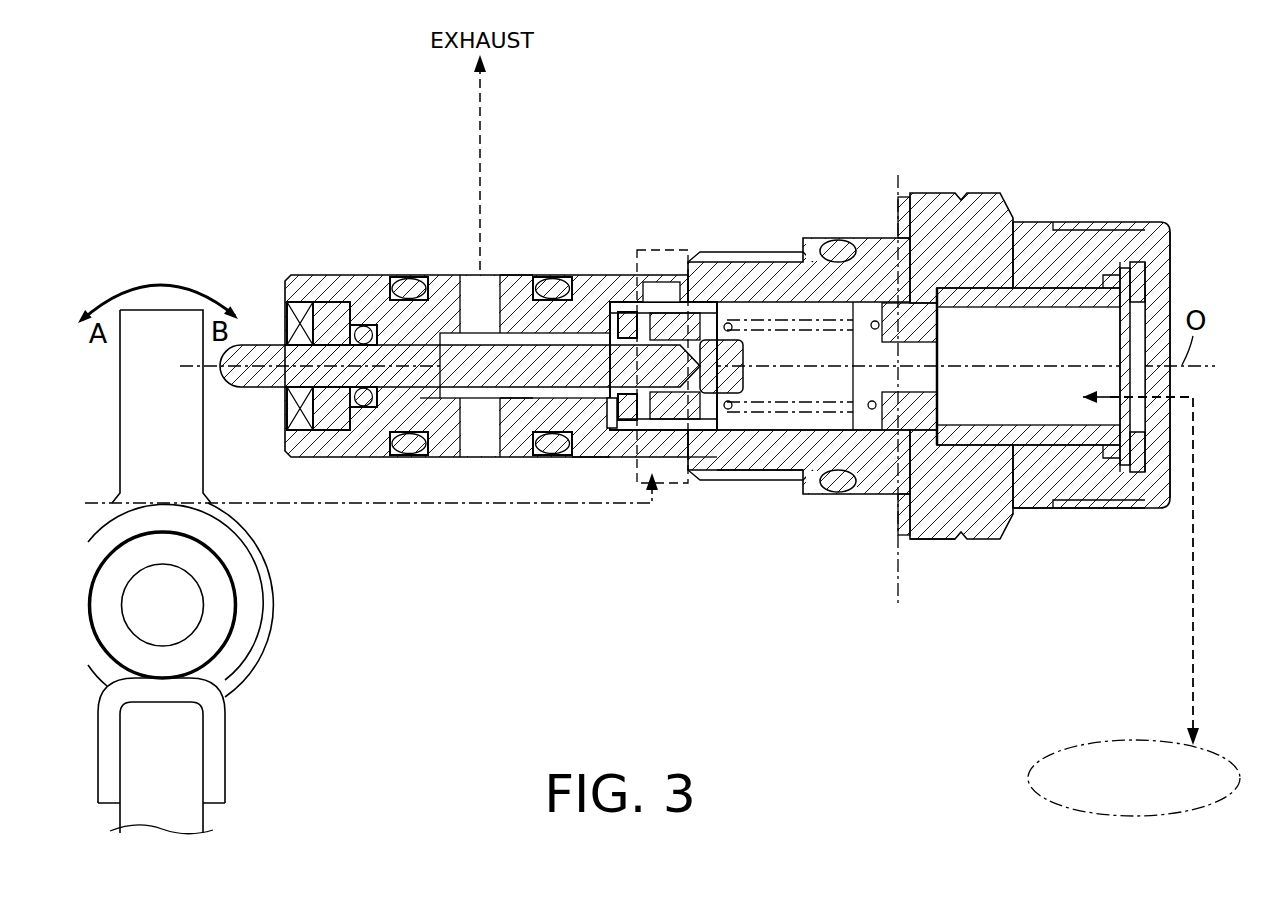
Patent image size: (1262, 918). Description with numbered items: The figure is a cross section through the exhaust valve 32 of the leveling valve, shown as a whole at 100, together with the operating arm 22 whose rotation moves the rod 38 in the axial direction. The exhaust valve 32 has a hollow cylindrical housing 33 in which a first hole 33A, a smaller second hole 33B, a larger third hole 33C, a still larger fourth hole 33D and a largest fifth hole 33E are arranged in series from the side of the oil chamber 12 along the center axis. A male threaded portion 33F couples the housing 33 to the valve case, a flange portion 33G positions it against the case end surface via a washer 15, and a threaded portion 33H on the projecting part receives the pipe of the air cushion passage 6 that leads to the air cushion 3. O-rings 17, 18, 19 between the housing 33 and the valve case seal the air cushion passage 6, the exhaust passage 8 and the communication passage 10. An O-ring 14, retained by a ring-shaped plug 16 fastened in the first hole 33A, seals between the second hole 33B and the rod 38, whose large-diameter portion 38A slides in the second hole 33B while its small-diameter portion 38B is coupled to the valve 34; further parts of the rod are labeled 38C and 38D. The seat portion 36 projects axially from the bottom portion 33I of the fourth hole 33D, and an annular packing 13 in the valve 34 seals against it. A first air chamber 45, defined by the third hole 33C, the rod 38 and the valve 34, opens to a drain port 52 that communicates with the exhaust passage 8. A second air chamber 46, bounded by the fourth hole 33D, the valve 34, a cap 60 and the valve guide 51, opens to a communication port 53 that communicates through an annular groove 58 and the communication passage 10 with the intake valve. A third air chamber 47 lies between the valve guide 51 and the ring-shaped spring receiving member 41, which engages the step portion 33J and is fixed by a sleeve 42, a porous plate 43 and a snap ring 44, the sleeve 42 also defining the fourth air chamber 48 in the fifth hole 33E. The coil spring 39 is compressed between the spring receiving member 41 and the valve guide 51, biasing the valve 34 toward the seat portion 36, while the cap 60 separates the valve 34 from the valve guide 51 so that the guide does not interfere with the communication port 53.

The air cushion 3 is at (1077, 747).
The air cushion passage 6 is at (1203, 530).
The exhaust passage 8 is at (478, 200).
The communication passage 10 is at (272, 507).
The oil chamber 12 is at (232, 440).
The packing 13 is at (598, 345).
The O-ring 14 is at (352, 330).
The washer 15 is at (900, 197).
The plug 16 is at (315, 302).
The O-ring 17 is at (372, 410).
The O-ring 18 is at (553, 456).
The O-ring 19 is at (840, 495).
The operating arm 22 is at (163, 345).
The exhaust valve 32 is at (283, 280).
The housing 33 is at (1153, 496).
The first hole 33A is at (333, 425).
The second hole 33B is at (432, 395).
The third hole 33C is at (508, 398).
The fourth hole 33D is at (705, 440).
The fifth hole 33E is at (1057, 500).
The male threaded portion 33F is at (750, 483).
The flange portion 33G is at (935, 522).
The threaded portion 33H is at (1100, 508).
The bottom portion 33I is at (608, 437).
The step portion 33J is at (887, 498).
The valve 34 is at (627, 305).
The seat portion 36 is at (523, 350).
The rod 38 is at (520, 277).
The large-diameter portion 38A is at (400, 277).
The small-diameter portion 38B is at (645, 312).
The O-ring 38C is at (553, 277).
The O-ring 38D is at (700, 310).
The spring 39 is at (885, 300).
The spring receiving member 41 is at (917, 308).
The sleeve 42 is at (978, 290).
The porous plate 43 is at (1123, 275).
The snap ring 44 is at (1133, 262).
The first air chamber 45 is at (598, 430).
The second air chamber 46 is at (690, 425).
The third air chamber 47 is at (760, 418).
The fourth air chamber 48 is at (1067, 412).
The valve guide 51 is at (752, 302).
The drain port 52 is at (463, 275).
The communication port 53 is at (648, 290).
The annular groove 58 is at (670, 487).
The cap 60 is at (707, 340).
The air cushion device 100 is at (1185, 213).